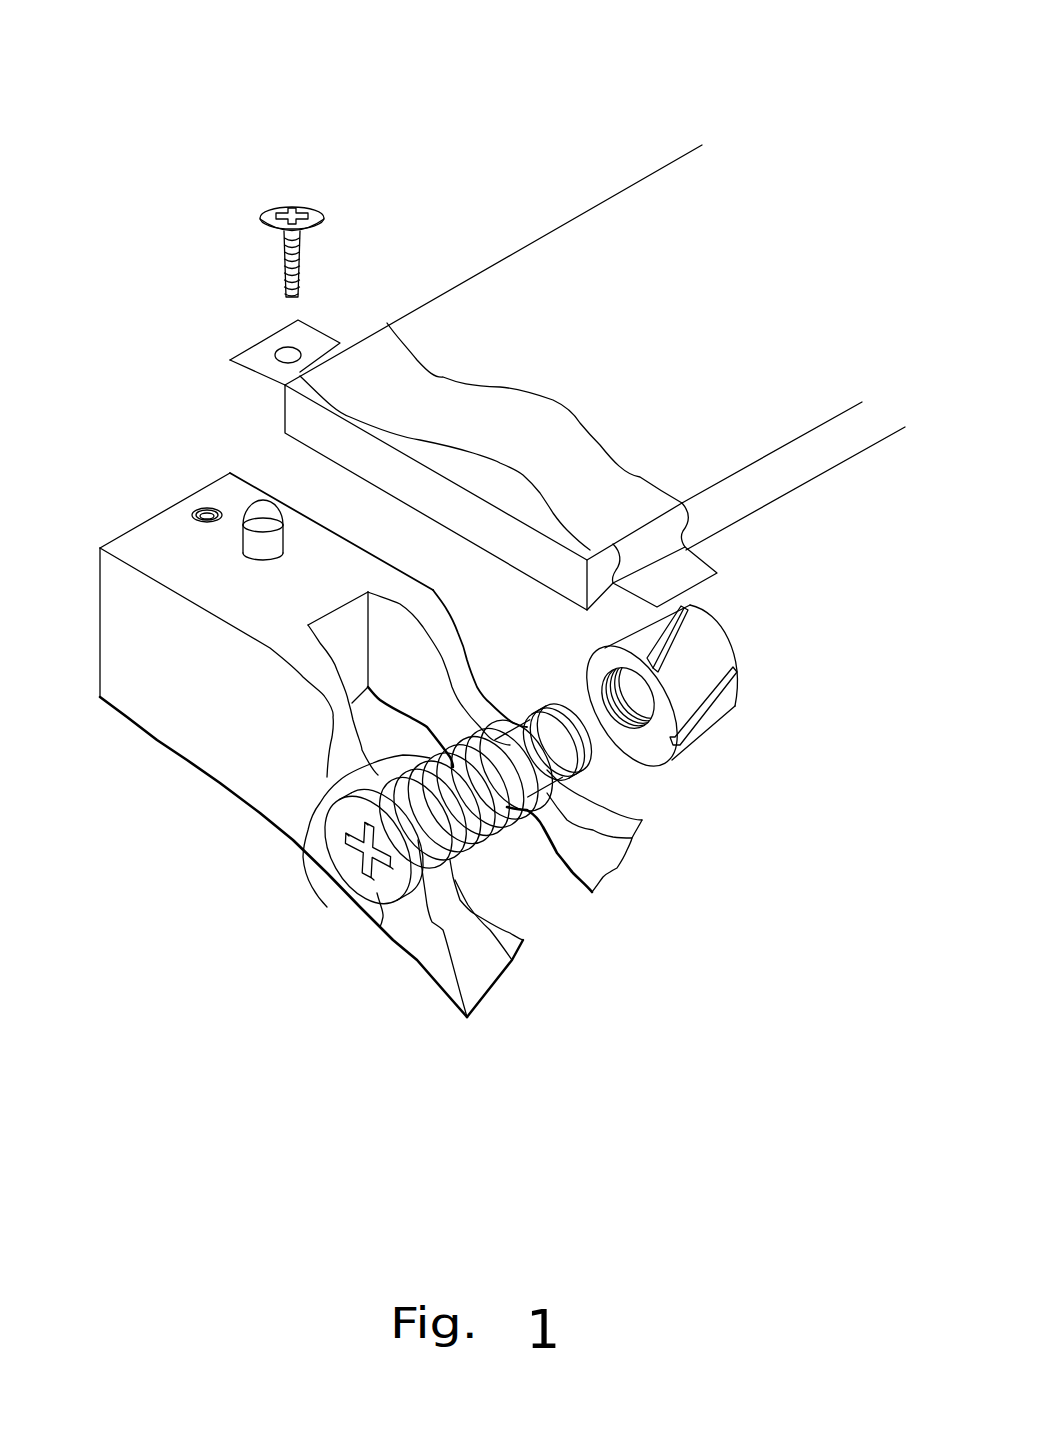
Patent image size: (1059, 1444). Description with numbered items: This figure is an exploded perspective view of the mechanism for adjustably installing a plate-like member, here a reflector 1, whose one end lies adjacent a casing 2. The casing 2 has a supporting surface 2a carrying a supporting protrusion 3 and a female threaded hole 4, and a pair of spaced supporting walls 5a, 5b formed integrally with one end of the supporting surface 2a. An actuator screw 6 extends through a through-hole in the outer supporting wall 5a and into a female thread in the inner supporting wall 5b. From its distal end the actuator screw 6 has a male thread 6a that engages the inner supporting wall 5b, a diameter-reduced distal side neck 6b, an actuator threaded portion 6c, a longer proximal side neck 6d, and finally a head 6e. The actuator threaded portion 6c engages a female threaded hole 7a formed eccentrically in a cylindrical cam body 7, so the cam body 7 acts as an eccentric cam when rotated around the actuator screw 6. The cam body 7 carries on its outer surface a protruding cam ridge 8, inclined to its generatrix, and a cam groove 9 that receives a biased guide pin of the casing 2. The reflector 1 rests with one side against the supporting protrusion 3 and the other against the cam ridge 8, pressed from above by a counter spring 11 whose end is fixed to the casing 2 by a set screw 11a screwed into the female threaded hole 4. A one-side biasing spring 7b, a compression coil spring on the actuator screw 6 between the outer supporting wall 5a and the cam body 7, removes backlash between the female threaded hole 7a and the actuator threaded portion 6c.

The reflector 1 is at (633, 207).
The casing 2 is at (115, 652).
The supporting surface 2a is at (147, 537).
The supporting protrusion 3 is at (260, 553).
The female threaded hole 4 is at (200, 508).
The outer supporting wall 5a is at (340, 745).
The inner supporting wall 5b is at (438, 613).
The actuator screw 6 is at (568, 895).
The male thread 6a is at (573, 755).
The distal side neck 6b is at (583, 777).
The actuator threaded portion 6c is at (522, 810).
The proximal side neck 6d is at (465, 1020).
The head 6e is at (380, 927).
The cylindrical cam body 7 is at (703, 673).
The female threaded hole 7a is at (600, 698).
The one-side biasing spring 7b is at (300, 835).
The cam ridge 8 is at (687, 625).
The cam groove 9 is at (727, 687).
The counter spring 11 is at (403, 350).
The set screw 11a is at (282, 203).